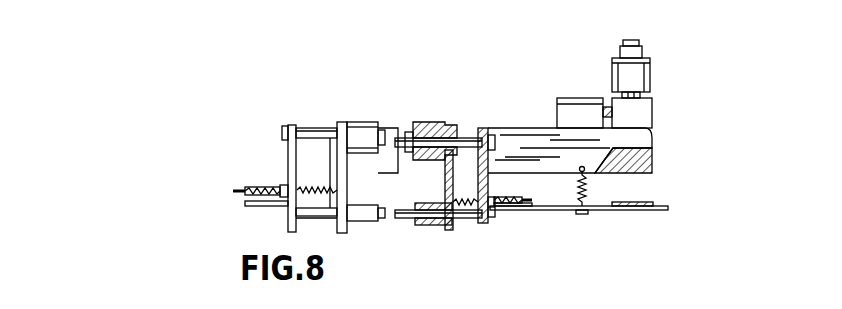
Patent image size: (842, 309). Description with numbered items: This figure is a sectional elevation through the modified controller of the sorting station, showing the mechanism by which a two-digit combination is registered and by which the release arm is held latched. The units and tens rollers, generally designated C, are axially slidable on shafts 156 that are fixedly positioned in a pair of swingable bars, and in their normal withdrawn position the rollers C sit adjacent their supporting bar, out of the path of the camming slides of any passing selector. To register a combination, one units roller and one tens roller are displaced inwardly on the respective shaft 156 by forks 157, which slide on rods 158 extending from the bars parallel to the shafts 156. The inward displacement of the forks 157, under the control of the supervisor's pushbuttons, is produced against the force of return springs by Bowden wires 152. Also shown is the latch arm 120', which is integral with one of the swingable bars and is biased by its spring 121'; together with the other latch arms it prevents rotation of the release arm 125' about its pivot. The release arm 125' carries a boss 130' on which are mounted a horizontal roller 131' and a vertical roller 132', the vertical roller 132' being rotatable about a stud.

The rollers C is at (428, 122).
The Bowden wires 152 is at (258, 180).
The shafts 156 is at (470, 140).
The forks 157 is at (447, 186).
The rods 158 is at (412, 220).
The latch arm 120' is at (570, 135).
The spring 121' is at (602, 191).
The release arm 125' is at (643, 160).
The boss 130' is at (652, 113).
The horizontal roller 131' is at (584, 102).
The vertical roller 132' is at (652, 69).